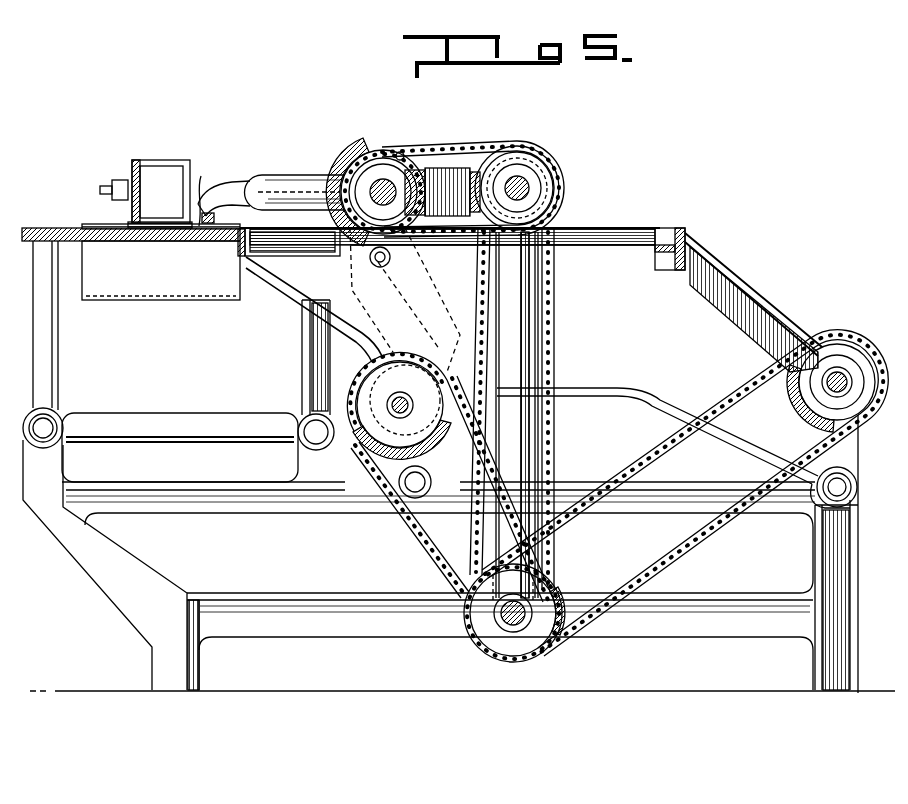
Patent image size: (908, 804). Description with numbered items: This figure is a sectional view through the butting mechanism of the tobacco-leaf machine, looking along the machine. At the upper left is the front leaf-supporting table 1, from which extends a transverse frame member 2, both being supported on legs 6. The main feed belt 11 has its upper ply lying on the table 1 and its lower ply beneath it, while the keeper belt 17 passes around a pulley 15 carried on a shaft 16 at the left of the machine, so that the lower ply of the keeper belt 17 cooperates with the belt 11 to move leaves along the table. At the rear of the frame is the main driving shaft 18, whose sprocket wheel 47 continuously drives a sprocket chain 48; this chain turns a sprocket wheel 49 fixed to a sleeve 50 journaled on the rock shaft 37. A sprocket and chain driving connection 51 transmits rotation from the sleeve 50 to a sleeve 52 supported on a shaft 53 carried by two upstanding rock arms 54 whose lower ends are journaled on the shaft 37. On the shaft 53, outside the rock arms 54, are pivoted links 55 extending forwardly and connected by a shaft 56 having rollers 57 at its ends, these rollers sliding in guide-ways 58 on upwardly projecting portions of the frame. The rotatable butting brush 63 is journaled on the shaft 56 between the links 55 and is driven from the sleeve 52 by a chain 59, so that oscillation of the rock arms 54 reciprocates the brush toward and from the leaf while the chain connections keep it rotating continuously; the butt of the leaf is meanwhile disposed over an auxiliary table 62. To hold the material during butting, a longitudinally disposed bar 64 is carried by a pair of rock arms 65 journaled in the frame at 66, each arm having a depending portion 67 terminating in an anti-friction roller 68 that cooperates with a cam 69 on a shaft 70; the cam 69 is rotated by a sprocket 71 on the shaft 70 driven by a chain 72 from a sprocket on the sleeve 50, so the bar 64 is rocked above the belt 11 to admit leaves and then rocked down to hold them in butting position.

The leaf-supporting table 1 is at (35, 228).
The transverse frame member 2 is at (722, 252).
The legs 6 is at (98, 578).
The main feed belt 11 is at (92, 226).
The pulley 15 is at (134, 168).
The shaft 16 is at (105, 188).
The keeper belt 17 is at (152, 222).
The main driving shaft 18 is at (842, 375).
The rock shaft 37 is at (517, 603).
The sprocket wheel 47 is at (862, 396).
The sprocket chain 48 is at (659, 453).
The sprocket wheel 49 is at (560, 590).
The sleeve 50 is at (519, 633).
The sprocket and chain driving connection 51 is at (552, 344).
The sleeve 52 is at (546, 192).
The shaft 53 is at (515, 182).
The rock arms 54 is at (530, 287).
The links 55 is at (447, 182).
The shaft 56 is at (384, 186).
The rollers 57 is at (350, 178).
The guide-ways 58 is at (294, 176).
The chain 59 is at (460, 146).
The auxiliary table 62 is at (262, 232).
The butting brush 63 is at (400, 152).
The bar 64 is at (203, 175).
The rock arms 65 is at (233, 184).
The journal 66 is at (390, 256).
The depending portion 67 is at (405, 304).
The anti-friction roller 68 is at (448, 368).
The cam 69 is at (420, 428).
The shaft 70 is at (400, 397).
The sprocket 71 is at (395, 492).
The chain 72 is at (423, 545).